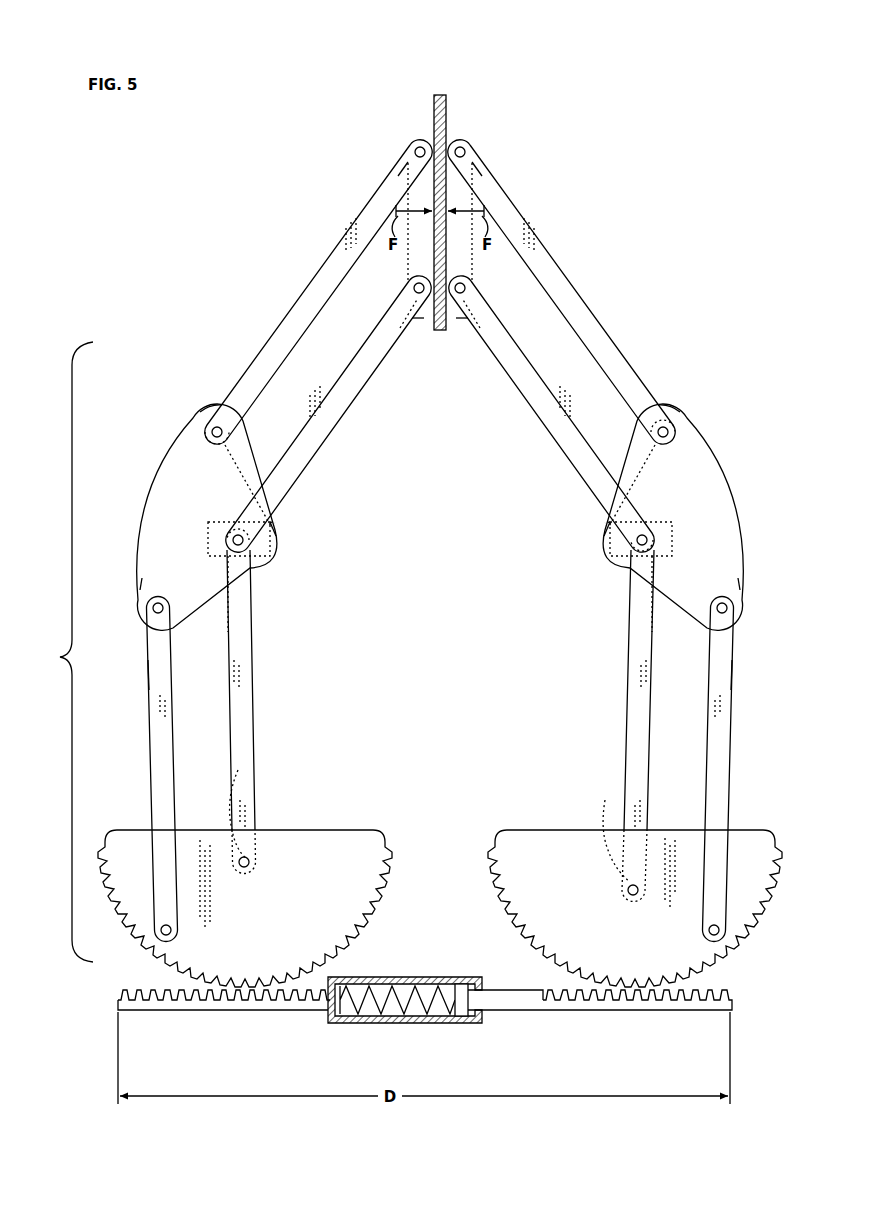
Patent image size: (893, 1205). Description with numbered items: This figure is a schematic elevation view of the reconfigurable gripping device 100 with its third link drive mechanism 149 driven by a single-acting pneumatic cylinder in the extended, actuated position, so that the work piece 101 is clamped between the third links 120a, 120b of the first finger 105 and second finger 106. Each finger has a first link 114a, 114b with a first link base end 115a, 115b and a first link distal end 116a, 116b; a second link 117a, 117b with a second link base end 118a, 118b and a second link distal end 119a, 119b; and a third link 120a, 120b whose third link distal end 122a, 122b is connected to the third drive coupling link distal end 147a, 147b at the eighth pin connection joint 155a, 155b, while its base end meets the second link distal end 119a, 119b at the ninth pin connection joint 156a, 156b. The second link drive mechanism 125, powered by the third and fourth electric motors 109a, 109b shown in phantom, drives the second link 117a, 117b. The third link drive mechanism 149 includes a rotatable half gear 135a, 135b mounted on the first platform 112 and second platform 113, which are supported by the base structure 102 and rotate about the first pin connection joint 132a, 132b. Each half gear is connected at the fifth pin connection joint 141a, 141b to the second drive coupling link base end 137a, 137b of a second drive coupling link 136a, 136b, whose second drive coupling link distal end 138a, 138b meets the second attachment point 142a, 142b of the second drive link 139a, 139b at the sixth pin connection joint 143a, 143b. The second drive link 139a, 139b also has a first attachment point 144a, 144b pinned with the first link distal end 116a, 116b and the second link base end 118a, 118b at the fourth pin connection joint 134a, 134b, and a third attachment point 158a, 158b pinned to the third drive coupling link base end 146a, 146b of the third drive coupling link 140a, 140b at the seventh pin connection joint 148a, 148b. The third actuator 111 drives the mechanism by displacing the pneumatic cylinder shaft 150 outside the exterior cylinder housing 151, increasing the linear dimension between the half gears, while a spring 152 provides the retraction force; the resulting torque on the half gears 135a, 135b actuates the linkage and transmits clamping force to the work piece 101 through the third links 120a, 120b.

The reconfigurable gripping device 100 is at (660, 132).
The work piece 101 is at (440, 335).
The base structure 102 is at (425, 1008).
The first finger 105 is at (162, 331).
The second finger 106 is at (640, 242).
The third electric motor 109a is at (275, 523).
The fourth electric motor 109b is at (605, 523).
The third actuator 111 is at (420, 975).
The first platform 112 is at (175, 1010).
The second platform 113 is at (670, 1010).
The first link 114a is at (252, 740).
The first link 114b is at (628, 740).
The first link base end 115a is at (238, 772).
The first link base end 115b is at (606, 800).
The first link distal end 116a is at (222, 632).
The first link distal end 116b is at (656, 632).
The second link 117a is at (322, 425).
The second link 117b is at (558, 425).
The second link base end 118a is at (242, 530).
The second link base end 118b is at (638, 530).
The second link distal end 119a is at (416, 322).
The second link distal end 119b is at (464, 322).
The third link 120a is at (413, 272).
The third link 120b is at (467, 272).
The third link distal end 122a is at (408, 140).
The third link distal end 122b is at (472, 140).
The second link drive mechanism 125 is at (206, 548).
The first pin connection joint 132a is at (247, 866).
The first pin connection joint 132b is at (630, 893).
The fourth pin connection joint 134a is at (258, 547).
The fourth pin connection joint 134b is at (622, 547).
The rotatable half gear 135a is at (222, 939).
The rotatable half gear 135b is at (622, 939).
The second drive coupling link 136a is at (152, 790).
The second drive coupling link 136b is at (728, 790).
The second drive coupling link base end 137a is at (148, 938).
The second drive coupling link base end 137b is at (705, 935).
The second drive coupling link distal end 138a is at (152, 670).
The second drive coupling link distal end 138b is at (726, 670).
The second drive link 139a is at (160, 542).
The second drive link 139b is at (679, 542).
The third drive coupling link 140a is at (292, 330).
The third drive coupling link 140b is at (588, 330).
The fifth pin connection joint 141a is at (172, 935).
The fifth pin connection joint 141b is at (720, 935).
The second attachment point 142a is at (152, 618).
The second attachment point 142b is at (728, 618).
The sixth pin connection joint 143a is at (160, 596).
The sixth pin connection joint 143b is at (720, 596).
The first attachment point 144a is at (282, 548).
The first attachment point 144b is at (598, 548).
The third drive coupling link base end 146a is at (192, 442).
The third drive coupling link base end 146b is at (688, 442).
The third drive coupling link distal end 147a is at (410, 152).
The third drive coupling link distal end 147b is at (470, 152).
The seventh pin connection joint 148a is at (225, 432).
The seventh pin connection joint 148b is at (655, 432).
The third link drive mechanism 149 is at (58, 652).
The pneumatic cylinder shaft 150 is at (540, 1011).
The exterior cylinder housing 151 is at (478, 1024).
The spring 152 is at (370, 1023).
The eighth pin connection joint 155a is at (402, 172).
The eighth pin connection joint 155b is at (478, 172).
The ninth pin connection joint 156a is at (406, 300).
The ninth pin connection joint 156b is at (474, 296).
The third attachment point 158a is at (203, 410).
The third attachment point 158b is at (677, 410).